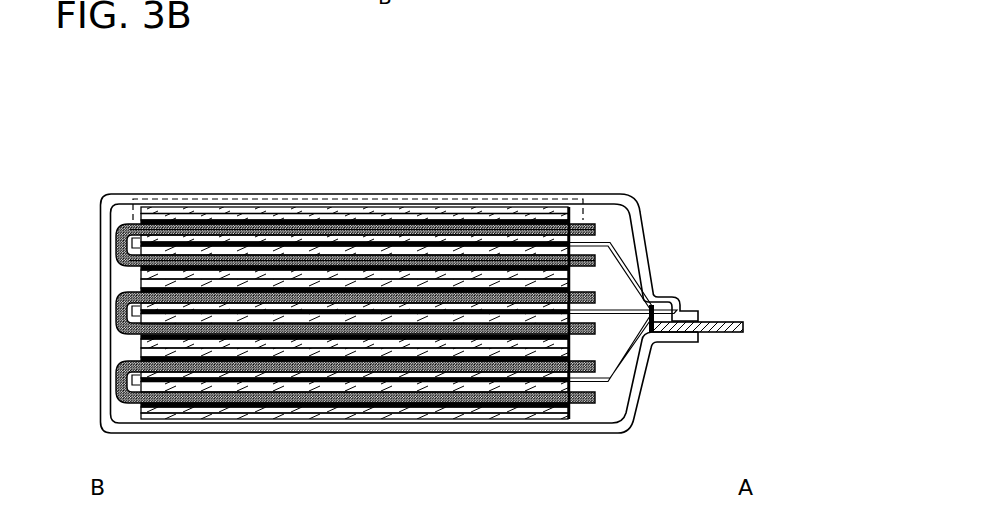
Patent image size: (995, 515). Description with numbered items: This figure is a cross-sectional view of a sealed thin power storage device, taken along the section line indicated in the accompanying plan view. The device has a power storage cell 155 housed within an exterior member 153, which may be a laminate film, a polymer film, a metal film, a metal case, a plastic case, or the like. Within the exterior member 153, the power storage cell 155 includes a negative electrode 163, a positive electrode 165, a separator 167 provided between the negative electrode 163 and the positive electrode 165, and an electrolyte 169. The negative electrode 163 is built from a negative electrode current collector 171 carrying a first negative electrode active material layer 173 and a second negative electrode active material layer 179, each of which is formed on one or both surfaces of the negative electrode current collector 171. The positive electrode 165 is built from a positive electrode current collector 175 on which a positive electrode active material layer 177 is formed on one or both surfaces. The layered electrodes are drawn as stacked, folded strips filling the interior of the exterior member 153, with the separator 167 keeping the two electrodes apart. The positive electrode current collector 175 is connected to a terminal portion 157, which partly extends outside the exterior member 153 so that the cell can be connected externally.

The exterior member 153 is at (640, 243).
The power storage cell 155 is at (142, 196).
The terminal portion 157 is at (737, 322).
The negative electrode 163 is at (350, 245).
The positive electrode 165 is at (355, 237).
The separator 167 is at (352, 207).
The electrolyte 169 is at (610, 230).
The negative electrode current collector 171 is at (203, 212).
The first negative electrode active material layer 173 is at (242, 220).
The positive electrode current collector 175 is at (468, 224).
The positive electrode active material layer 177 is at (412, 224).
The second negative electrode active material layer 179 is at (167, 123).